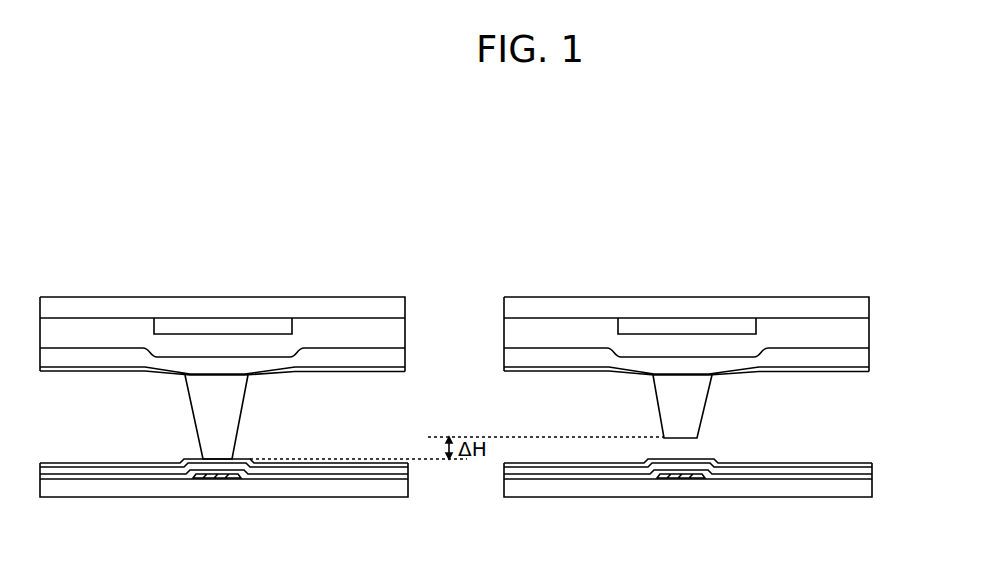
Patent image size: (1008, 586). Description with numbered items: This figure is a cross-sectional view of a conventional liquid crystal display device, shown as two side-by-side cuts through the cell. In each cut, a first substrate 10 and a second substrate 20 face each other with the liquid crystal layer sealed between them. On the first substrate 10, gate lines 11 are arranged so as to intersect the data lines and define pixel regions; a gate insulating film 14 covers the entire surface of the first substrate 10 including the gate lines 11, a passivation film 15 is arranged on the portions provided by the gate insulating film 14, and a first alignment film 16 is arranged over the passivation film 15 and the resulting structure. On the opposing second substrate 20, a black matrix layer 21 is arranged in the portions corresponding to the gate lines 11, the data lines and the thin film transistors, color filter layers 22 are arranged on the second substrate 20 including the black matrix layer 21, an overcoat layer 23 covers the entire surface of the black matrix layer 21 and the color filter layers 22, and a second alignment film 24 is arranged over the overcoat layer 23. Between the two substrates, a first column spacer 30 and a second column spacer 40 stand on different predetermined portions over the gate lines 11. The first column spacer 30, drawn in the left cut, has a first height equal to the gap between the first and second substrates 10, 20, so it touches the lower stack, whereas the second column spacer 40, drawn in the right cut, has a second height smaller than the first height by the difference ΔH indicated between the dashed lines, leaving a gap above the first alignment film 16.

The first substrate 10 is at (408, 487).
The gate lines 11 is at (215, 480).
The gate insulating film 14 is at (388, 478).
The passivation film 15 is at (360, 473).
The first alignment film 16 is at (328, 466).
The second substrate 20 is at (405, 305).
The black matrix layer 21 is at (279, 326).
The color filter layers 22 is at (405, 333).
The overcoat layer 23 is at (405, 357).
The second alignment film 24 is at (404, 371).
The first column spacer 30 is at (228, 418).
The second column spacer 40 is at (694, 410).